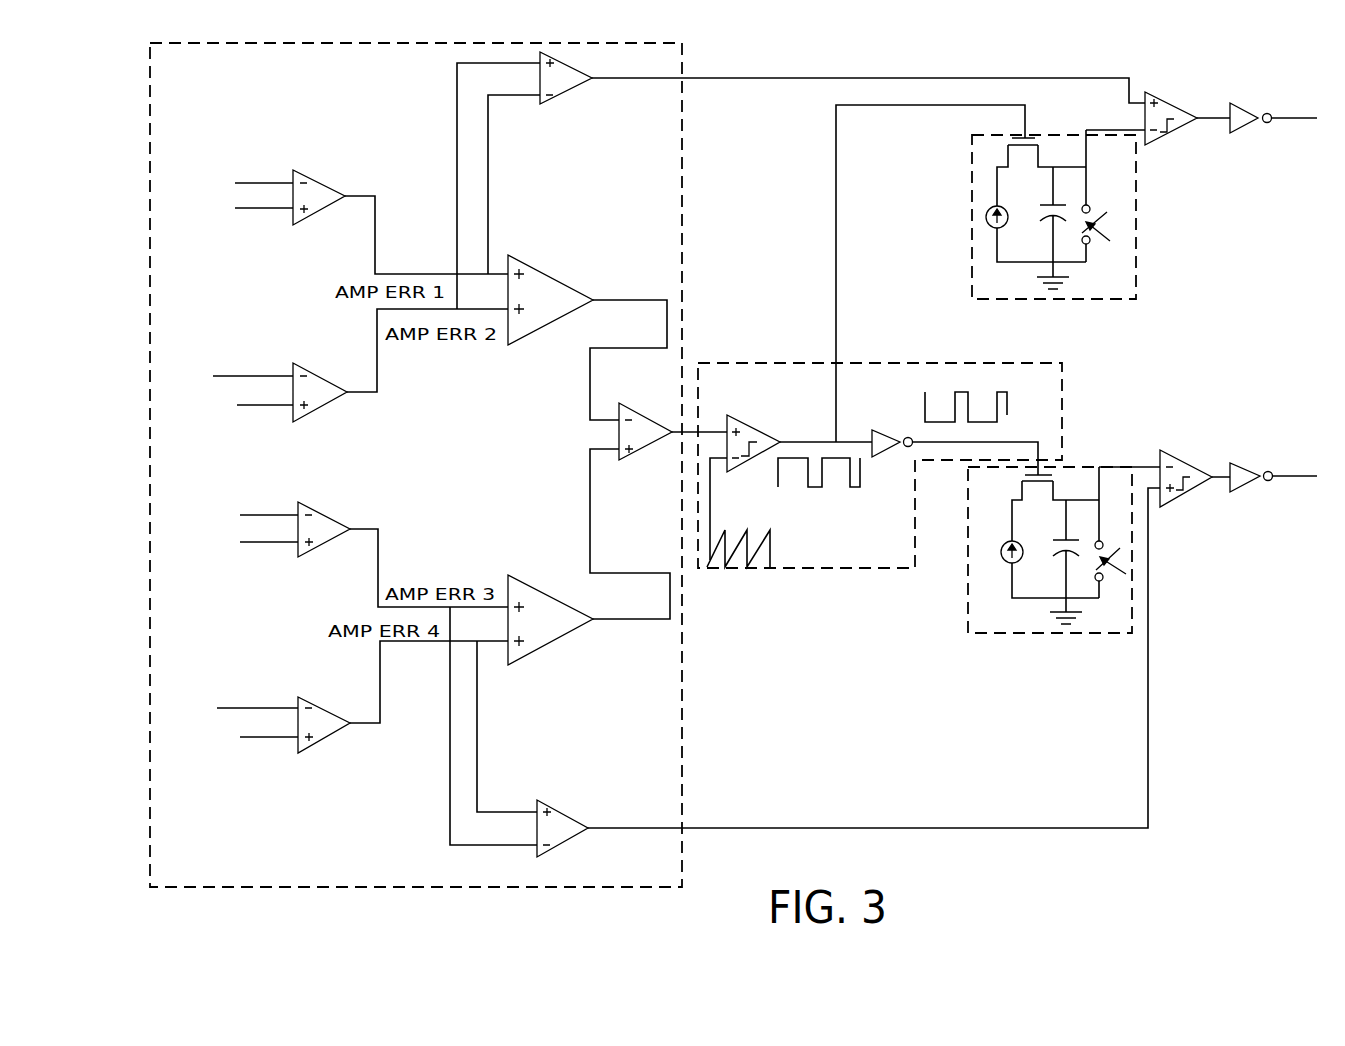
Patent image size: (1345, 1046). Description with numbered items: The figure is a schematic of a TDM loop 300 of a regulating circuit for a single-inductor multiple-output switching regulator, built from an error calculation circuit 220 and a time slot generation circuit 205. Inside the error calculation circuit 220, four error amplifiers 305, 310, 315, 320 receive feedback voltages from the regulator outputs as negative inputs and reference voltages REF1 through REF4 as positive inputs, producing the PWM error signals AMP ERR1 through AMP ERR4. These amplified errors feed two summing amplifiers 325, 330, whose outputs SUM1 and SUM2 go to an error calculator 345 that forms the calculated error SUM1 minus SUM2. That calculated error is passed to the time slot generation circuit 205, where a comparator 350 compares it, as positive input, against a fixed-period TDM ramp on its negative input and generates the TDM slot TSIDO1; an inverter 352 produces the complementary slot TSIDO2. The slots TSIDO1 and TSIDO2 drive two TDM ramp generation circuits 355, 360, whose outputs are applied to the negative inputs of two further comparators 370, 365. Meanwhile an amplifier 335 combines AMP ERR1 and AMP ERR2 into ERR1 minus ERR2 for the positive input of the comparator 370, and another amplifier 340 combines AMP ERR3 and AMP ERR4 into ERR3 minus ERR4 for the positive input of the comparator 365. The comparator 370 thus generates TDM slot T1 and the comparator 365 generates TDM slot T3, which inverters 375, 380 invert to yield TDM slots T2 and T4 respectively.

The time slot generation circuit 205 is at (800, 569).
The error calculation circuit 220 is at (151, 772).
The TDM loop 300 is at (1222, 657).
The error amplifier 305 is at (312, 214).
The error amplifier 310 is at (330, 404).
The error amplifier 315 is at (316, 548).
The error amplifier 320 is at (335, 735).
The summing amplifier 325 is at (525, 337).
The summing amplifier 330 is at (553, 641).
The amplifier 335 is at (540, 106).
The amplifier 340 is at (550, 801).
The error calculator 345 is at (650, 474).
The comparator 350 is at (774, 403).
The inverter 352 is at (878, 428).
The TDM ramp generation circuit 355 is at (1136, 250).
The TDM ramp generation circuit 360 is at (969, 598).
The comparator 365 is at (1175, 502).
The comparator 370 is at (1170, 138).
The inverter 375 is at (1250, 128).
The inverter 380 is at (1252, 486).